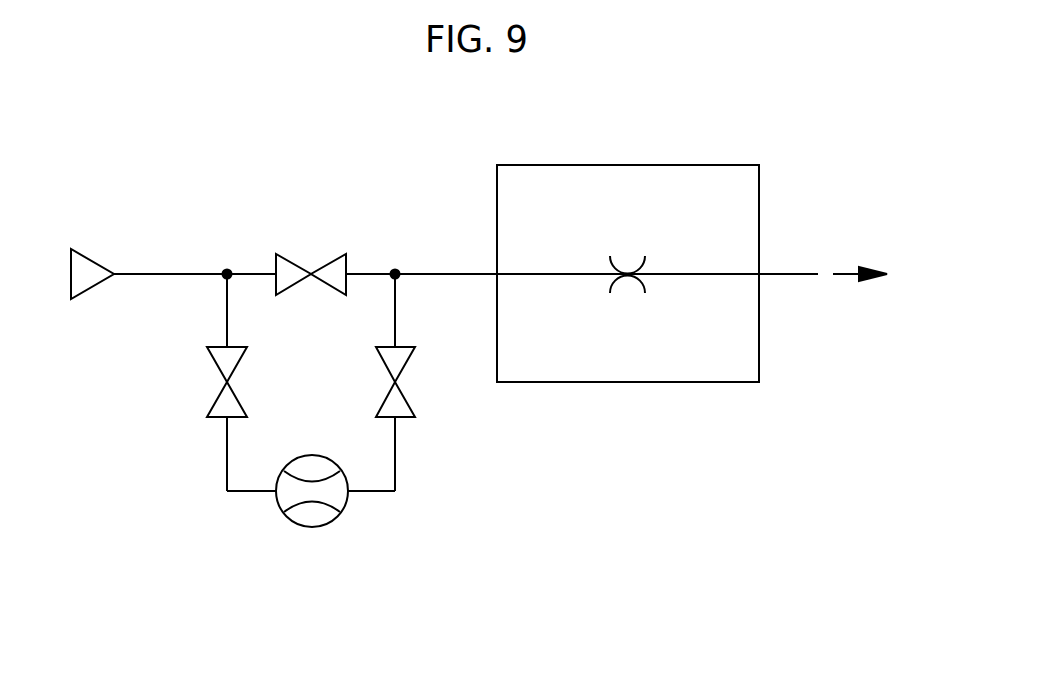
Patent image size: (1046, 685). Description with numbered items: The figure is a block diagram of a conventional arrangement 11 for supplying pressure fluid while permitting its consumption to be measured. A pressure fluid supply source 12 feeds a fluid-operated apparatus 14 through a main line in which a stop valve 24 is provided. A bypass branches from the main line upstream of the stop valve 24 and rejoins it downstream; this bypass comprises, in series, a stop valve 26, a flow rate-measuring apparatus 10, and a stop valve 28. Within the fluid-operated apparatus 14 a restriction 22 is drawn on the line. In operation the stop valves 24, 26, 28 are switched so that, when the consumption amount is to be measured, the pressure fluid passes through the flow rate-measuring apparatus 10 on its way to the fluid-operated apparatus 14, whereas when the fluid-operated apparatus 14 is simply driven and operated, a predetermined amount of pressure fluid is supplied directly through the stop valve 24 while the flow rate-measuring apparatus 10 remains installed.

The flow rate-measuring apparatus 10 is at (313, 540).
The fluid supply system 11 is at (160, 100).
The pressure fluid supply source 12 is at (94, 261).
The fluid-operated apparatus 14 is at (690, 165).
The orifice 22 is at (627, 300).
The stop valve 24 is at (298, 262).
The stop valve 26 is at (218, 398).
The stop valve 28 is at (405, 367).